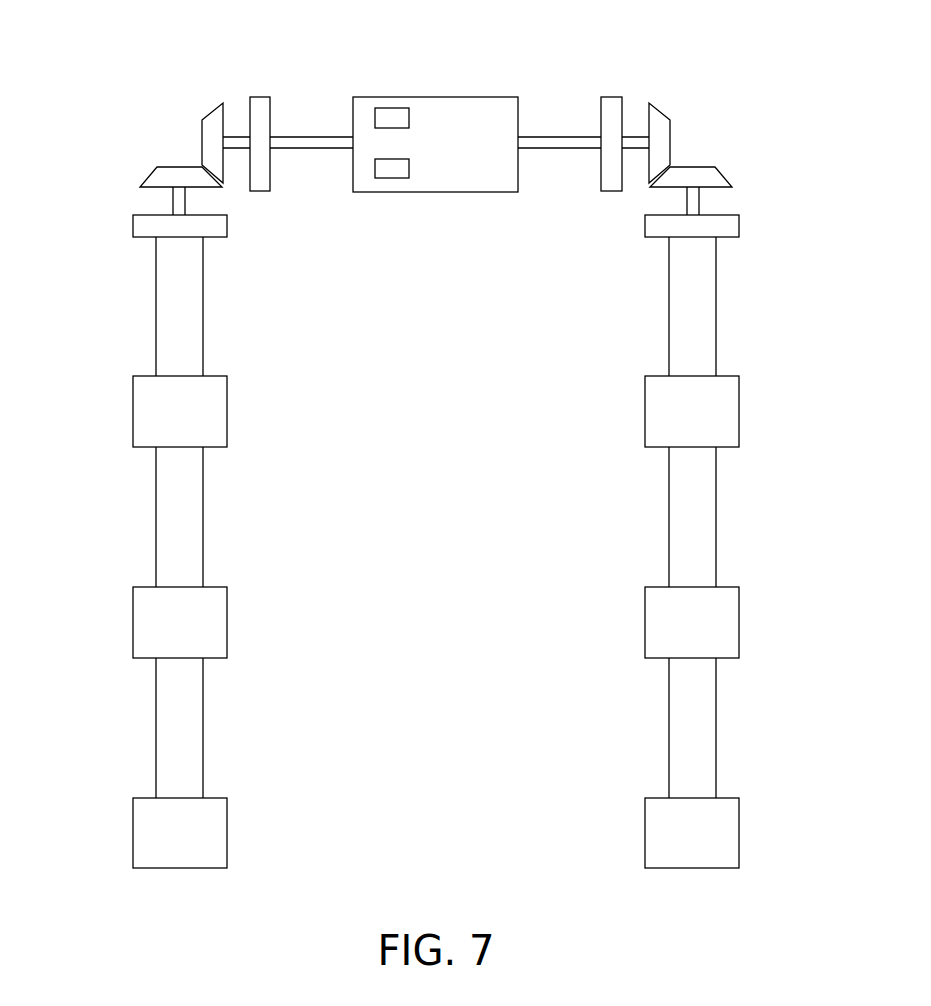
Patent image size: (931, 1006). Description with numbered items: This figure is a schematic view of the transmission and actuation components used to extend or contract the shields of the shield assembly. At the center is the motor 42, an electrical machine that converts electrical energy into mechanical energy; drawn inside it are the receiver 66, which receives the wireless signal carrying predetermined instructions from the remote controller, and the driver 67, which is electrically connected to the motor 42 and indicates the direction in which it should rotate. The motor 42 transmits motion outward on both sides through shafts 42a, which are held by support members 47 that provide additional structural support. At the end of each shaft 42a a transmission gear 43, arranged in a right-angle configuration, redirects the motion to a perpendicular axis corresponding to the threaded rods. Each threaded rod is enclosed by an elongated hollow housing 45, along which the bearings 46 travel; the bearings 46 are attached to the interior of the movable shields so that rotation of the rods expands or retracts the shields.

The motor 42 is at (492, 97).
The shafts 42a is at (317, 135).
The transmission gears 43 is at (216, 106).
The housings 45 is at (156, 304).
The bearings 46 is at (133, 411).
The support members 47 is at (258, 97).
The receiver 66 is at (390, 108).
The driver 67 is at (390, 178).